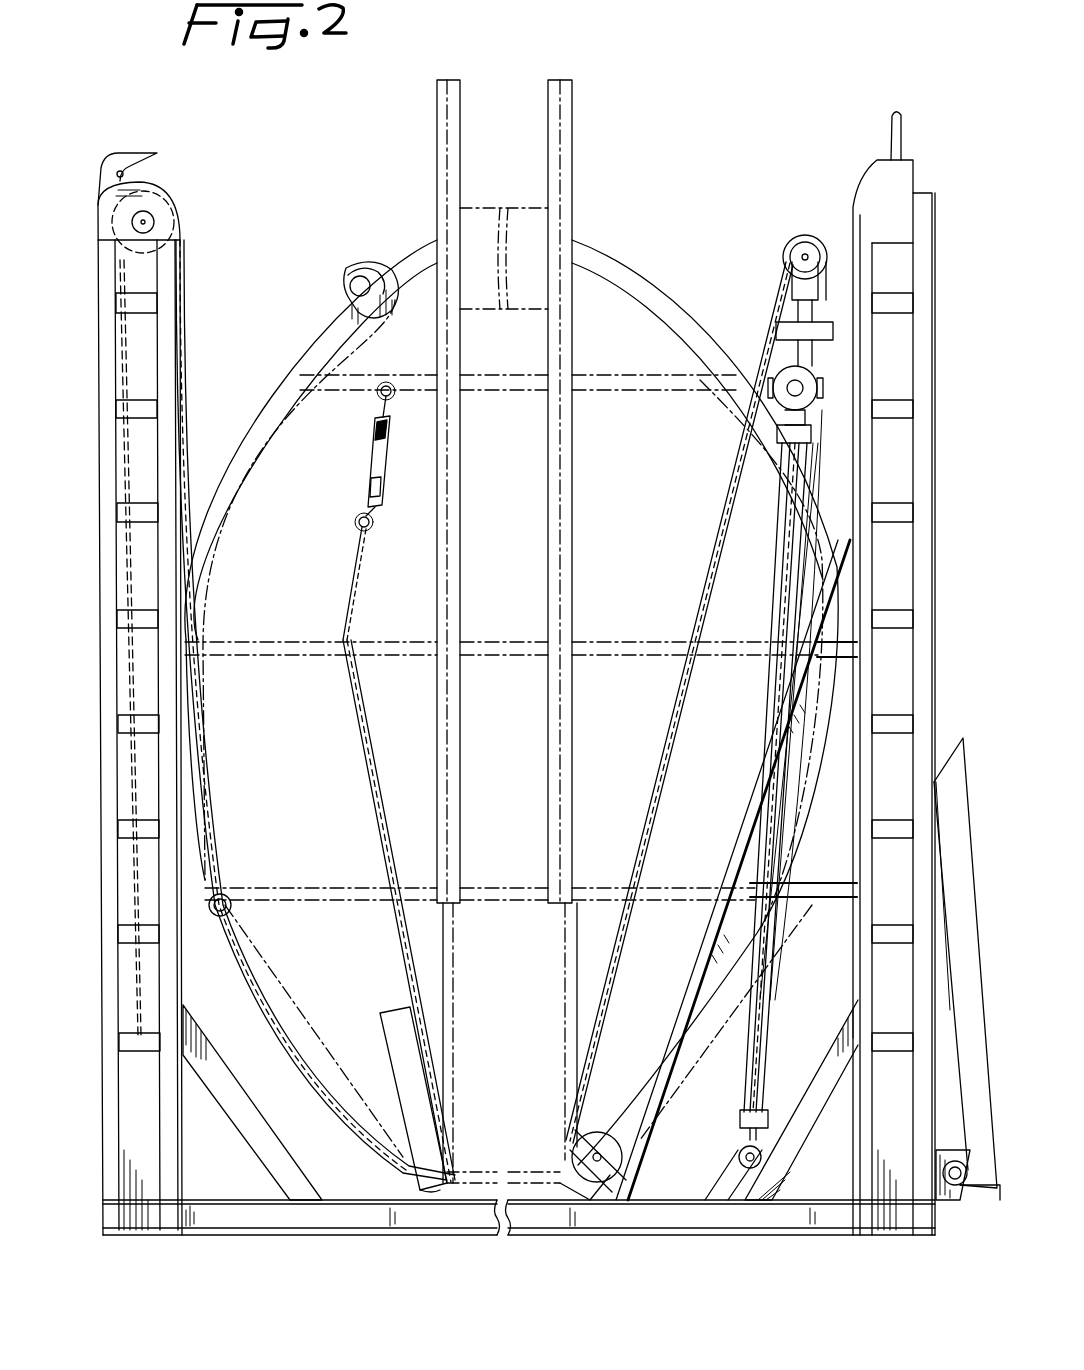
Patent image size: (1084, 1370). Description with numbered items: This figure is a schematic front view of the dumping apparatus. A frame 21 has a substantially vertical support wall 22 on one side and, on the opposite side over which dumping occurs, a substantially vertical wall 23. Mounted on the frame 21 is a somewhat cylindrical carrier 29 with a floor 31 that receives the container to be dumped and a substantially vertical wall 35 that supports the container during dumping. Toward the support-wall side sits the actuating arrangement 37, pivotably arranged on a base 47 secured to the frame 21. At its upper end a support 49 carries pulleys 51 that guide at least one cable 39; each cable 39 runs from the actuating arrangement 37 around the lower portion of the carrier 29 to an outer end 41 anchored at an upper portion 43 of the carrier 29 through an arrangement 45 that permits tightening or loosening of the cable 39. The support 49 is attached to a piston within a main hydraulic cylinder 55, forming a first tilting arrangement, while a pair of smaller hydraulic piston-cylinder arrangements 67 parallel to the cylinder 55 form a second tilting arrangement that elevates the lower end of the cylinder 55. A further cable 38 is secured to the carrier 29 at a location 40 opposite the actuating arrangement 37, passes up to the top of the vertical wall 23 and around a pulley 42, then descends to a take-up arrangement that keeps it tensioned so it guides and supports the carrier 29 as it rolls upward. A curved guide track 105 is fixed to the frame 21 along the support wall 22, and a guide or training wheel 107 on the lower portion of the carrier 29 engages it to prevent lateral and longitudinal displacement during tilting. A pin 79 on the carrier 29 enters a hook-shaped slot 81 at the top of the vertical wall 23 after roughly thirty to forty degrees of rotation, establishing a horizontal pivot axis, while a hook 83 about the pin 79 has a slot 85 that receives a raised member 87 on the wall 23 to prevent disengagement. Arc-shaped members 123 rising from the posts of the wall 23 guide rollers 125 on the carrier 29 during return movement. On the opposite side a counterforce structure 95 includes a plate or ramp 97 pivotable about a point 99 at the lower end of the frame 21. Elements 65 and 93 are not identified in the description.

The frame 21 is at (395, 1242).
The vertical support wall 22 is at (928, 554).
The vertical wall 23 is at (100, 405).
The carrier 29 is at (612, 262).
The floor 31 is at (483, 1198).
The vertical wall 35 is at (458, 95).
The actuating arrangement 37 is at (822, 462).
The cable 38 is at (182, 392).
The cable 39 is at (770, 340).
The location 40 is at (226, 900).
The outer end 41 is at (358, 524).
The pulley 42 is at (150, 240).
The upper portion 43 is at (383, 388).
The arrangement 45 is at (375, 422).
The base 47 is at (762, 1190).
The support 49 is at (833, 330).
The pulleys 51 is at (806, 244).
The cylinder 55 is at (803, 528).
The lower right pulley 65 is at (810, 393).
The hydraulic piston-cylinder arrangements 67 is at (803, 497).
The pin 79 is at (358, 286).
The hook-shaped slot 81 is at (120, 162).
The hook 83 is at (380, 268).
The slot 85 is at (348, 272).
The raised member 87 is at (122, 193).
The discharge chute 93 is at (397, 1107).
The counterforce structure 95 is at (946, 752).
The plate or ramp 97 is at (948, 958).
The point 99 is at (957, 1187).
The curved guide track 105 is at (773, 775).
The guide or training wheel 107 is at (615, 1200).
The arc-shaped members 123 is at (901, 118).
The rollers 125 is at (598, 1172).